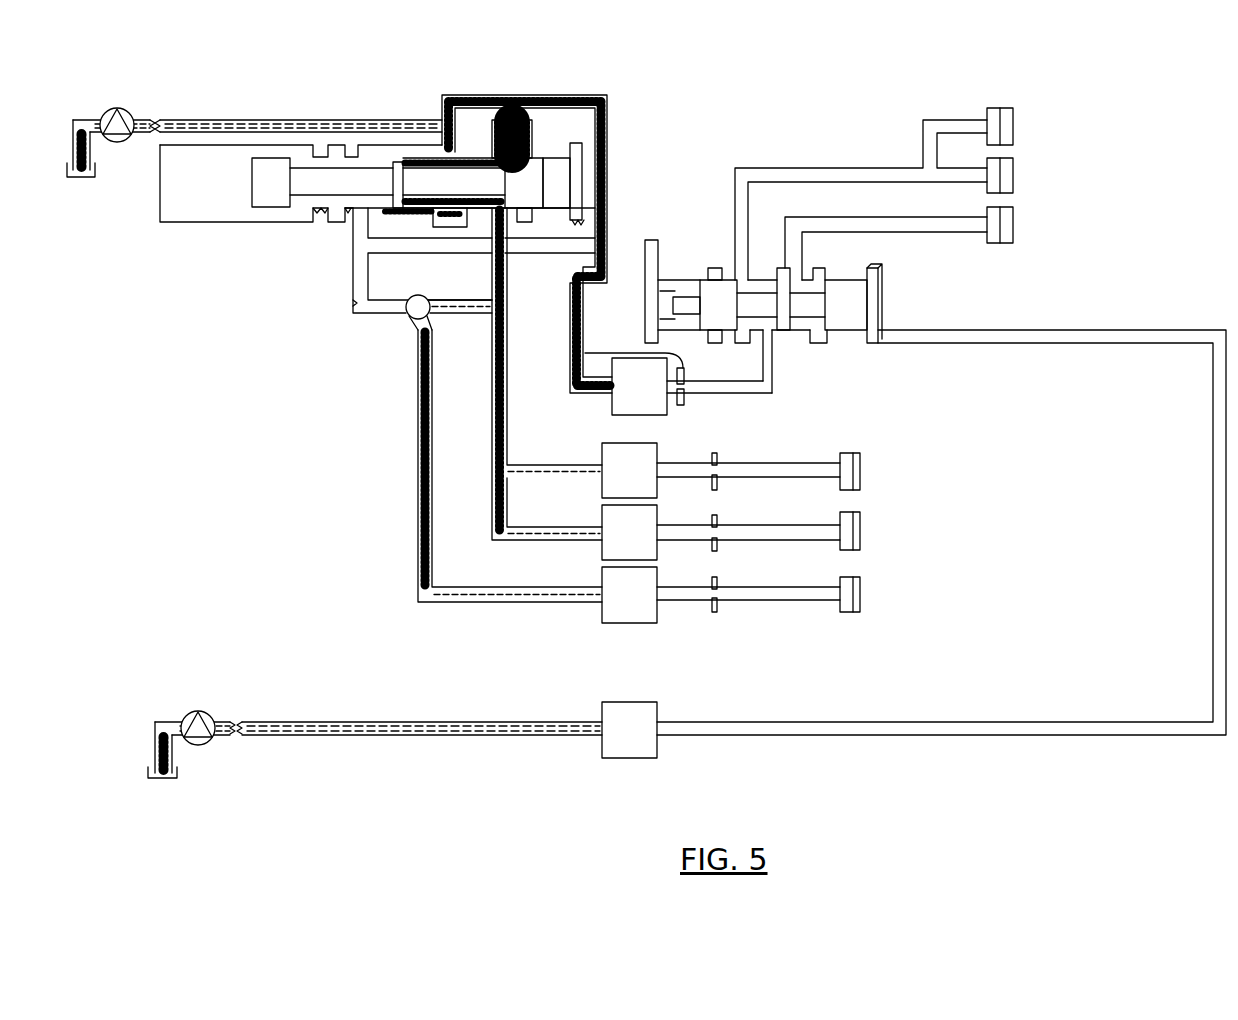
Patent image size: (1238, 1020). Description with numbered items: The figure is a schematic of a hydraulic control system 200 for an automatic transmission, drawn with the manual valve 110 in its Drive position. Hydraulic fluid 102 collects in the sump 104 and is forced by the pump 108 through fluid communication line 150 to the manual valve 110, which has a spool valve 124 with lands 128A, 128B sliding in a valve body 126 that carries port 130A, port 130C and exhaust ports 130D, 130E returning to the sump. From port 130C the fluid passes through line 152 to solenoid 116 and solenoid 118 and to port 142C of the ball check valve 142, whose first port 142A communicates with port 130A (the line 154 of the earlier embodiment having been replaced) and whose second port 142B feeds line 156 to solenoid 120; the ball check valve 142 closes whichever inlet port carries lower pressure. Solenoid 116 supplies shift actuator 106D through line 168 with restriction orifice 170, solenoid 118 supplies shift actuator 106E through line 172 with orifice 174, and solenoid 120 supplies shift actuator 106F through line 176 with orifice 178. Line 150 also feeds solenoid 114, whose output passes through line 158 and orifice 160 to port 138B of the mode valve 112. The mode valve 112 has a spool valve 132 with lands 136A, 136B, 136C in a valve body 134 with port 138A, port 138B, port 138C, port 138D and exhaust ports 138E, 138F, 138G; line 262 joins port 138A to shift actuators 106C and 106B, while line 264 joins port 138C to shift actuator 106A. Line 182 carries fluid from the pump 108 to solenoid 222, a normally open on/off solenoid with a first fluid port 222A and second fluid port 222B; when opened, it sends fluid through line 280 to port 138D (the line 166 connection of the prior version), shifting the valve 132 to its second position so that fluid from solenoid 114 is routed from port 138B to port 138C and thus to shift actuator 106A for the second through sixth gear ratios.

The hydraulic fluid 102 is at (85, 185).
The sump 104 is at (80, 150).
The pump 108 is at (123, 108).
The manual valve 110 is at (632, 121).
The mode valve 112 is at (776, 315).
The solenoid 114 is at (692, 386).
The solenoid 116 is at (629, 470).
The solenoid 118 is at (629, 532).
The solenoid 120 is at (629, 595).
The valve 124 is at (440, 180).
The valve body 126 is at (385, 245).
The land 128A is at (400, 170).
The land 128B is at (520, 180).
The port 130A is at (352, 228).
The port 130C is at (495, 230).
The port 130D is at (575, 225).
The port 130E is at (270, 222).
The valve 132 is at (838, 300).
The valve body 134 is at (878, 262).
The land 136A is at (718, 305).
The land 136B is at (768, 290).
The land 136C is at (875, 285).
The port 138A is at (745, 280).
The port 138B is at (768, 335).
The port 138C is at (787, 285).
The port 138D is at (872, 340).
The port 138E is at (650, 275).
The port 138F is at (718, 345).
The port 138G is at (818, 340).
The ball check valve 142 is at (362, 338).
The first port 142A is at (406, 318).
The second port 142B is at (420, 345).
The third port 142C is at (435, 318).
The fluid communication line 150 is at (215, 120).
The fluid communication line 152 is at (492, 420).
The fluid communication line 154 is at (350, 305).
The fluid communication line 156 is at (416, 480).
The fluid communication line 158 is at (698, 405).
The fluid restriction orifice 160 is at (585, 360).
The fluid communication line 166 is at (880, 310).
The fluid communication line 168 is at (778, 462).
The fluid restriction orifice 170 is at (710, 482).
The fluid communication line 172 is at (778, 524).
The fluid restriction orifice 174 is at (717, 520).
The fluid communication line 176 is at (778, 586).
The fluid restriction orifice 178 is at (717, 584).
The fluid communication line 182 is at (355, 715).
The hydraulic control system 200 is at (898, 107).
The solenoid 222 is at (629, 730).
The first fluid port 222A is at (595, 735).
The second fluid port 222B is at (700, 705).
The fluid communication line 262 is at (848, 170).
The fluid communication line 264 is at (918, 222).
The fluid communication line 280 is at (1189, 326).
The shift actuator 106A is at (1015, 232).
The shift actuator 106B is at (1015, 180).
The shift actuator 106C is at (1015, 135).
The shift actuator 106D is at (860, 460).
The shift actuator 106E is at (860, 540).
The shift actuator 106F is at (860, 605).